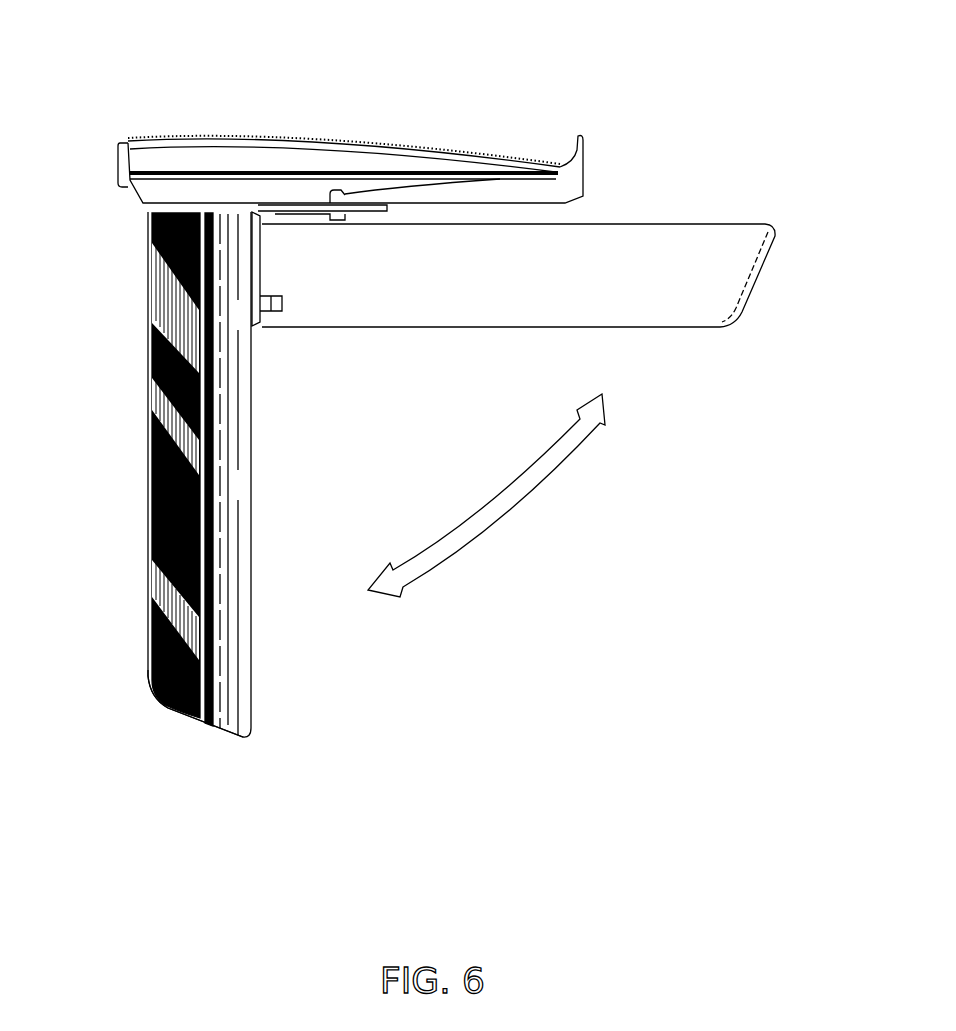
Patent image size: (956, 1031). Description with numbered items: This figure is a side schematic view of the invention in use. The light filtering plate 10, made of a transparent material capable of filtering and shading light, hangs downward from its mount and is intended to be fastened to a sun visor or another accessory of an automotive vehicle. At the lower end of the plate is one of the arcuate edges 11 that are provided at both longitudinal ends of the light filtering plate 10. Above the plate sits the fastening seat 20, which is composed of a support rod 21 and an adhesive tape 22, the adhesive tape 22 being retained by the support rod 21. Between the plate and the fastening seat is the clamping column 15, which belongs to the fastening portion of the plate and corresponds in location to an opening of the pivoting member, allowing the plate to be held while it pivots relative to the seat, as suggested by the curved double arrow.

The light filtering plate 10 is at (245, 450).
The arcuate edge 11 is at (163, 703).
The clamping column 15 is at (345, 193).
The fastening seat 20 is at (565, 191).
The support rod 21 is at (120, 168).
The adhesive tape 22 is at (262, 137).